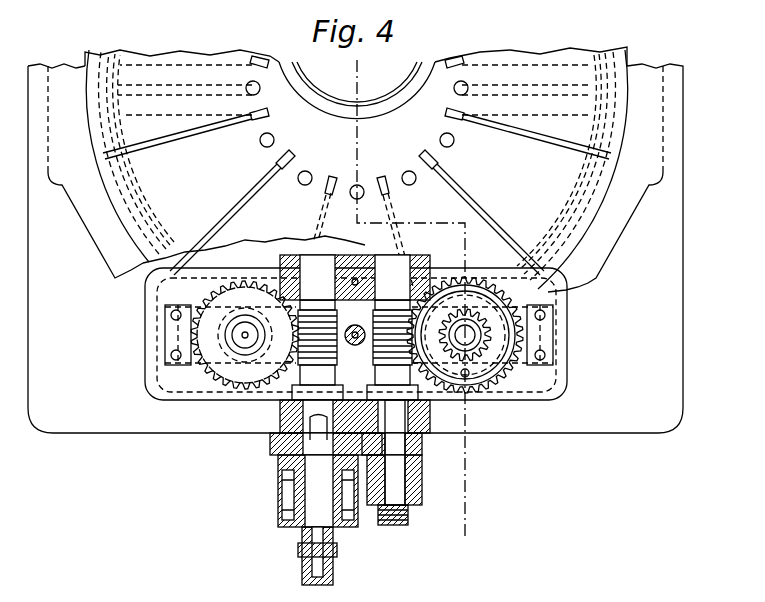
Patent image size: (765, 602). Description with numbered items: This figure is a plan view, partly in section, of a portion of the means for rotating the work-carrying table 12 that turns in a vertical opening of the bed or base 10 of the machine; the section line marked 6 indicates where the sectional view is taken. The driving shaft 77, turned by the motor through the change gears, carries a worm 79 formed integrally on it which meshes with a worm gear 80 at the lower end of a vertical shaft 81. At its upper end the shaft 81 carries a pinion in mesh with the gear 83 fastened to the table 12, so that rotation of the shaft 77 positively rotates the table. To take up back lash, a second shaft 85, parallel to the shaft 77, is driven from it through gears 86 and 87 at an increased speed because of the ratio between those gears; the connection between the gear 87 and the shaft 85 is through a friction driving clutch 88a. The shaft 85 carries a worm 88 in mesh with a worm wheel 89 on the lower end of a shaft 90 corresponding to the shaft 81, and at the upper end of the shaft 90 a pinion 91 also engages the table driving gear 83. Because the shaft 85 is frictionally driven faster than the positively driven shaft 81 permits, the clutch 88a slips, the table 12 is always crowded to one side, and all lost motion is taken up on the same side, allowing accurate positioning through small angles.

The bed or base 10 is at (670, 237).
The work-carrying table 12 is at (150, 173).
The section line 6- 6 is at (450, 526).
The driving shaft 77 is at (308, 515).
The worm 79 is at (287, 340).
The worm gear 80 is at (213, 377).
The vertical shaft 81 is at (233, 337).
The gear 83 is at (520, 305).
The shaft 85 is at (388, 410).
The gear 86 is at (272, 450).
The gear 87 is at (422, 443).
The worm 88 is at (415, 327).
The friction driving clutch 88a is at (418, 475).
The worm wheel 89 is at (485, 395).
The shaft 90 is at (520, 343).
The pinion 91 is at (510, 370).